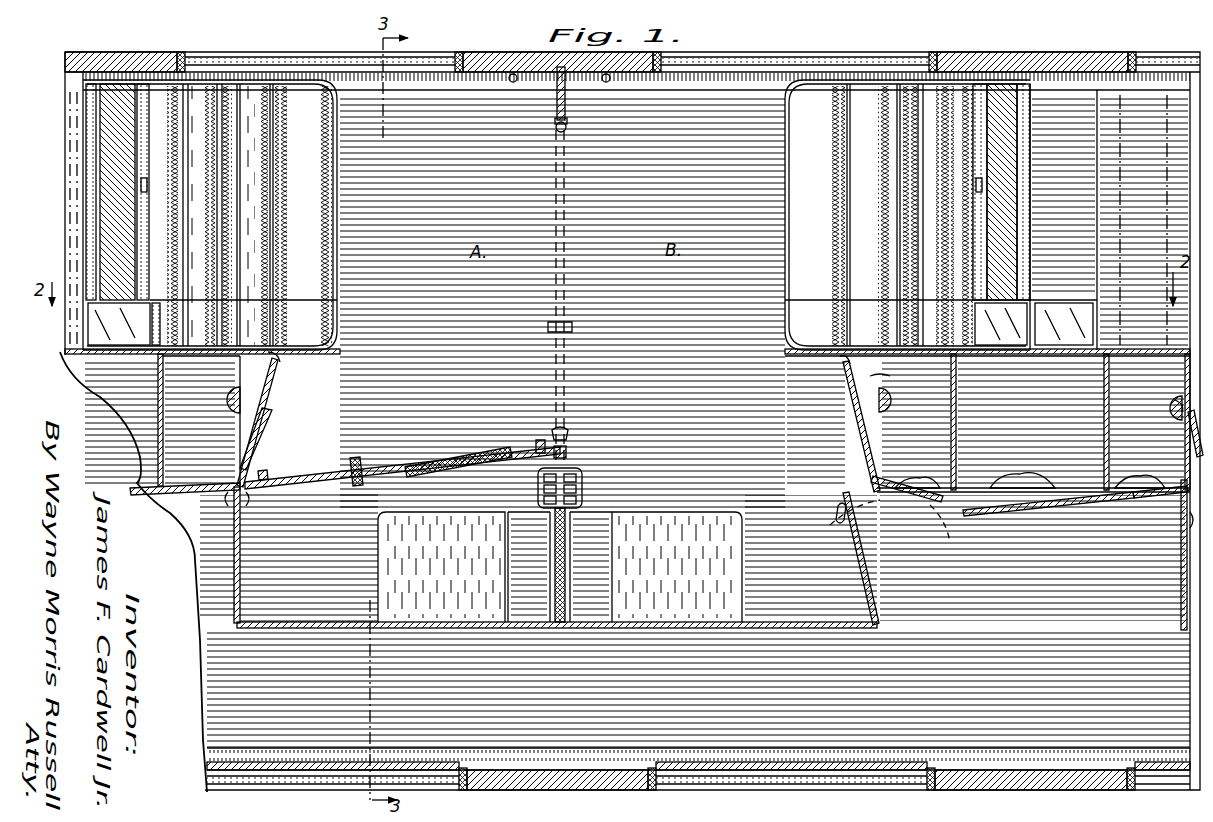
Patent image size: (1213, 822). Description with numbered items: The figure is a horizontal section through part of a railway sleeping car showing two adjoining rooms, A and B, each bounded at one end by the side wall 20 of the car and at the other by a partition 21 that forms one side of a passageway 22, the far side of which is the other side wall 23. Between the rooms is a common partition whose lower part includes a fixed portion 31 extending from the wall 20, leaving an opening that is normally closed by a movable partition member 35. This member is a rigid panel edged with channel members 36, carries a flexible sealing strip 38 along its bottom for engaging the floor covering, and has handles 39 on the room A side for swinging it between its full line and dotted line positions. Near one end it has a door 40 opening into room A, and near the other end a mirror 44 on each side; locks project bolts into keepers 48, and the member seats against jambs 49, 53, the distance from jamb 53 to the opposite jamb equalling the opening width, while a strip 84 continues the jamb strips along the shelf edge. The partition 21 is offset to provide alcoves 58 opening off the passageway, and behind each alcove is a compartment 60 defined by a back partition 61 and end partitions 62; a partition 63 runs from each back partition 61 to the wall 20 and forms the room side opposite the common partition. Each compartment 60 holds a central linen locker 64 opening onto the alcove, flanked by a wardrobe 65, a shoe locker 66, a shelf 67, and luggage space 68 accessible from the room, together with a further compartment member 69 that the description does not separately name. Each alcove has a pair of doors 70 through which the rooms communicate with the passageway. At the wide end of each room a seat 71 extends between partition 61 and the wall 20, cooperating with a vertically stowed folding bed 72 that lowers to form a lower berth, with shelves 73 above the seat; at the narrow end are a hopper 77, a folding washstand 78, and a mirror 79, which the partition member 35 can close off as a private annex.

The side wall 20 is at (590, 76).
The partition 21 is at (770, 612).
The passageway 22 is at (698, 689).
The other side wall 23 is at (555, 772).
The fixed lower partition portion 31 is at (567, 113).
The movable partition member 35 is at (554, 359).
The channel members 36 is at (309, 556).
The flexible sealing strip 38 is at (563, 514).
The handles 39 is at (262, 471).
The door 40 is at (313, 478).
The mirror 44 is at (460, 460).
The keeper 48 is at (568, 451).
The jamb 49 is at (568, 128).
The jamb 53 is at (566, 432).
The alcove 58 is at (196, 545).
The compartment 60 is at (190, 489).
The back partition 61 is at (146, 346).
The end partitions 62 is at (226, 466).
The partition 63 is at (88, 161).
The linen locker 64 is at (140, 420).
The wardrobe 65 is at (186, 470).
The shoe locker 66 is at (232, 414).
The shelf 67 is at (234, 400).
The luggage space 68 is at (1044, 478).
The post 69 is at (1070, 422).
The doors 70 is at (234, 572).
The seat 71 is at (330, 222).
The folding bed 72 is at (112, 180).
The shelves 73 is at (114, 350).
The hopper 77 is at (745, 548).
The folding washstand 78 is at (622, 553).
The mirror 79 is at (565, 580).
The strip 84 is at (555, 103).